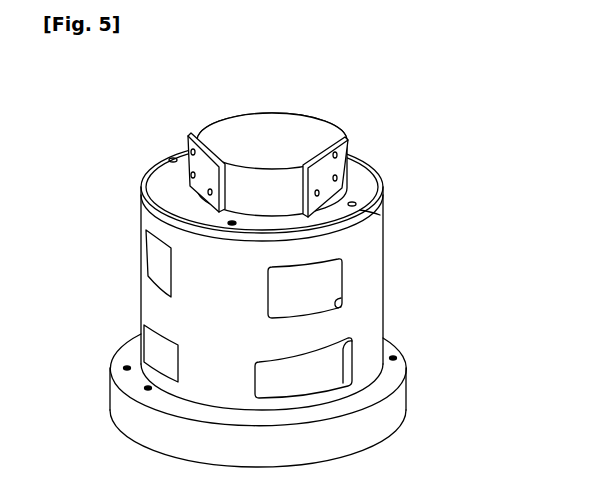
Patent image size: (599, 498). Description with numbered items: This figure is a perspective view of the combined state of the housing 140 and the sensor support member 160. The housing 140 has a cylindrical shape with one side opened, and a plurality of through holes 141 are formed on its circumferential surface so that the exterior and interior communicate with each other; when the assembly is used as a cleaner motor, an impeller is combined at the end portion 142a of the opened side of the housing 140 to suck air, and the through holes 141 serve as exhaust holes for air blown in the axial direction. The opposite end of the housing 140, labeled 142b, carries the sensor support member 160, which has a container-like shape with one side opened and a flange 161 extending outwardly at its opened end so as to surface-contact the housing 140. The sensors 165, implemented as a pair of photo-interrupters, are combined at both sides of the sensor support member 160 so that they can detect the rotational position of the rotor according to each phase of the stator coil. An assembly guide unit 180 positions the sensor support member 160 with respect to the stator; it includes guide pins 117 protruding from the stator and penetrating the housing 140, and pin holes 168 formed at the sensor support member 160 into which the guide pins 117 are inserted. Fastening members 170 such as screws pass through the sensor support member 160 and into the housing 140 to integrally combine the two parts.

The housing 140 is at (274, 311).
The through holes 141 is at (352, 341).
The end portion 142a is at (132, 437).
The upper edge portion 142b is at (141, 197).
The sensor support member 160 is at (288, 121).
The flange 161 is at (358, 176).
The sensors 165 is at (186, 134).
The fastening members 170 is at (197, 221).
The guide pins 117 is at (357, 206).
The pin holes 168 is at (409, 224).
The assembly guide unit 180 is at (337, 200).